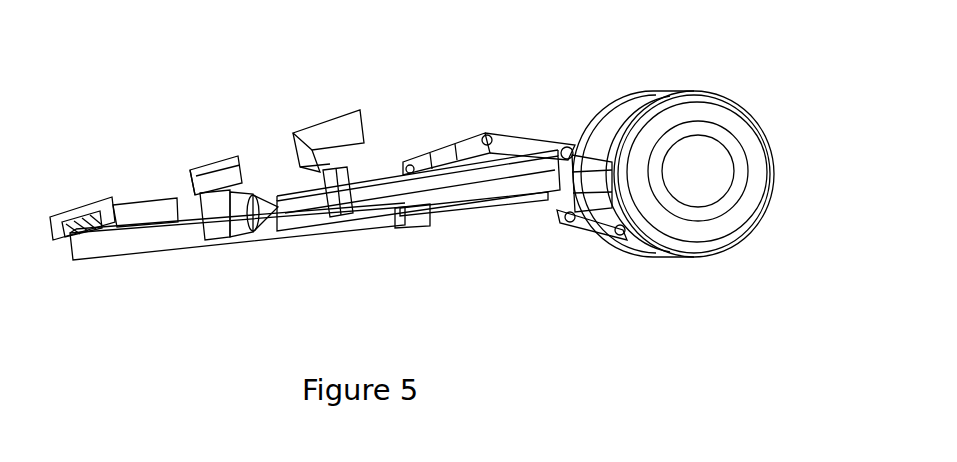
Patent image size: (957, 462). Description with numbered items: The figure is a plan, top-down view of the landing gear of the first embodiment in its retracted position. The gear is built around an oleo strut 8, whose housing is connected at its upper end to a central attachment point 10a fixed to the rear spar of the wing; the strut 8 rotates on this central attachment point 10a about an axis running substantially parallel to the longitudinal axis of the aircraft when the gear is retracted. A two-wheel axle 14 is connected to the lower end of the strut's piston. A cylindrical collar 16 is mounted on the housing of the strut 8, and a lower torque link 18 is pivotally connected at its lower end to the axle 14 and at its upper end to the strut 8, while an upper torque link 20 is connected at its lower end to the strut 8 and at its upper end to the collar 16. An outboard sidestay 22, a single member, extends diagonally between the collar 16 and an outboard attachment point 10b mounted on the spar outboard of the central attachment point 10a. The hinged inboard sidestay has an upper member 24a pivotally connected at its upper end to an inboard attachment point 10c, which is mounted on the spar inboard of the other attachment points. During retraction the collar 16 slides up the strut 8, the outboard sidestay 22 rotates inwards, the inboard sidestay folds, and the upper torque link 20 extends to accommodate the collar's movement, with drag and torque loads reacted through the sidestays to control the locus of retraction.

The oleo strut 8 is at (553, 185).
The central attachment point 10a is at (218, 172).
The outboard attachment point 10b is at (100, 210).
The inboard attachment point 10c is at (348, 132).
The two-wheel axle 14 is at (705, 75).
The cylindrical collar 16 is at (407, 223).
The lower torque link 18 is at (592, 222).
The upper torque link 20 is at (523, 148).
The outboard sidestay 22 is at (148, 240).
The upper member 24a is at (483, 178).